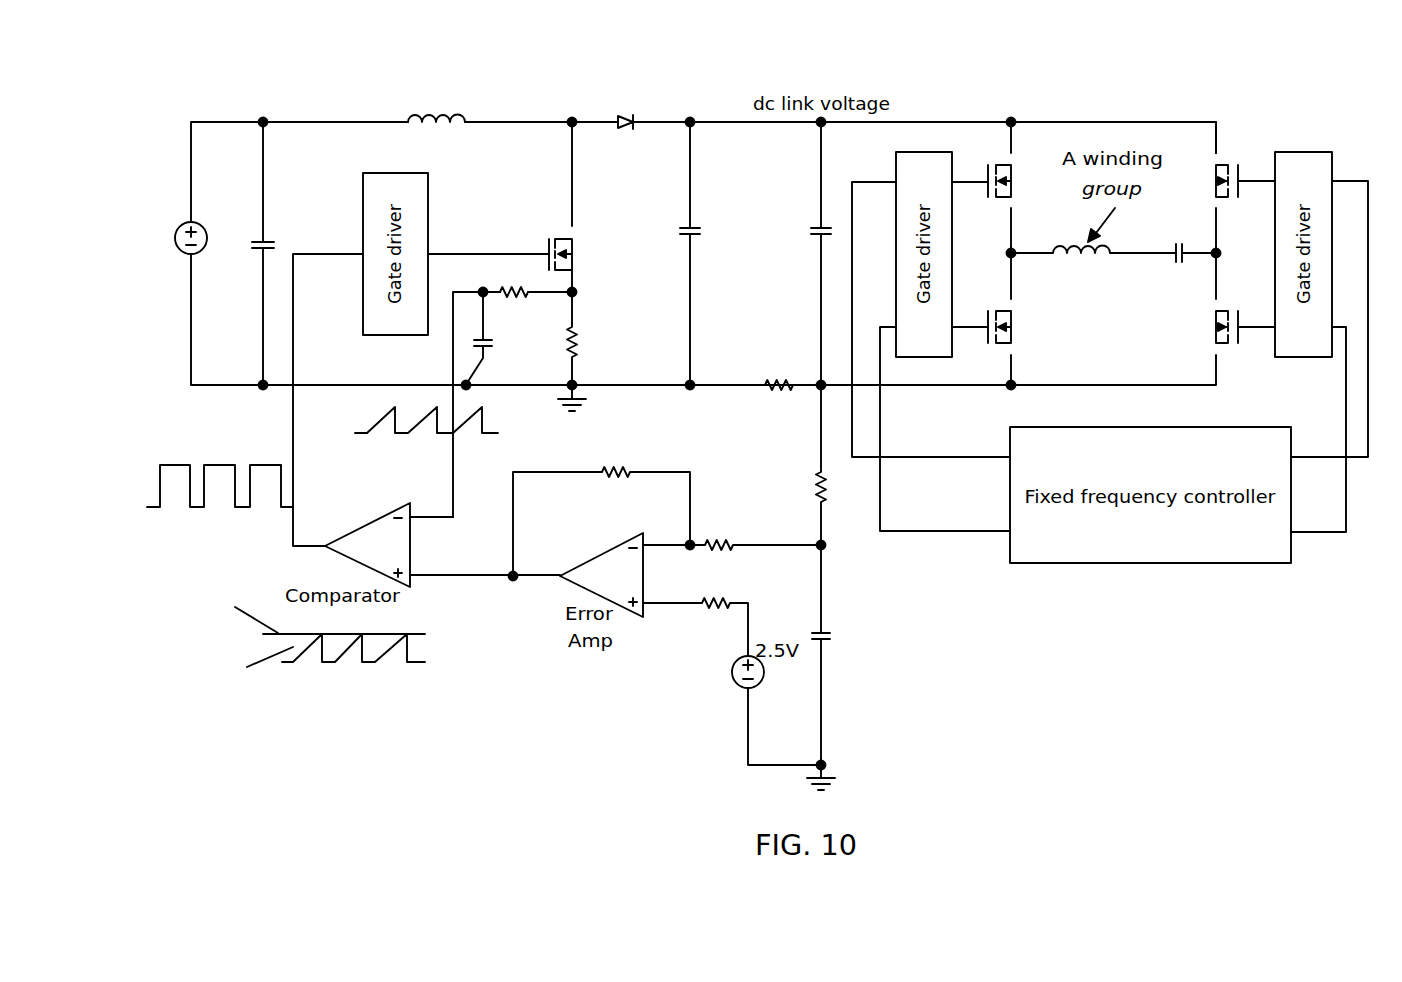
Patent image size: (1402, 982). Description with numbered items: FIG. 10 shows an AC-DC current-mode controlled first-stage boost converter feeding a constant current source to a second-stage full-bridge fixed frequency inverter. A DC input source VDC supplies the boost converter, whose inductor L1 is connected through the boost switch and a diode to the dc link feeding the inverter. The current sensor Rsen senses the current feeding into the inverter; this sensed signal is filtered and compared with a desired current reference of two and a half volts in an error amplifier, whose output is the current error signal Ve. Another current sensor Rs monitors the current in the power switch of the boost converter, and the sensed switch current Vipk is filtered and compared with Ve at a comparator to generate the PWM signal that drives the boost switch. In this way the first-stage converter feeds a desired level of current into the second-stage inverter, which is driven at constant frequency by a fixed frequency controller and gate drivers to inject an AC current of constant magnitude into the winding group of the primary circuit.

The boost inductor L1 is at (436, 101).
The current sensor Rs is at (587, 338).
The current sensor Rsen is at (775, 373).
The DC voltage source VDC is at (170, 229).
The PWM signal PWM is at (293, 520).
The sensed switch current Vipk is at (455, 515).
The current error signal Ve is at (442, 577).